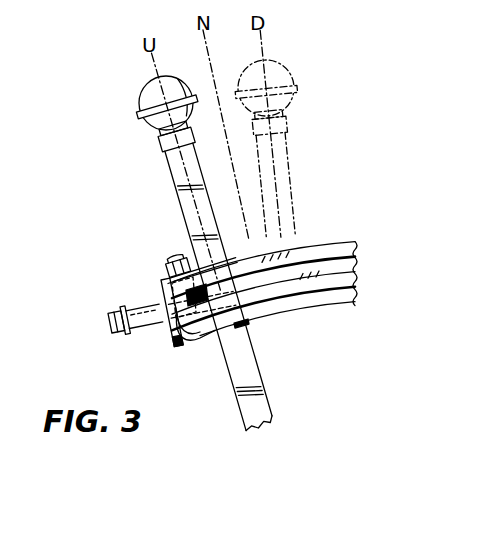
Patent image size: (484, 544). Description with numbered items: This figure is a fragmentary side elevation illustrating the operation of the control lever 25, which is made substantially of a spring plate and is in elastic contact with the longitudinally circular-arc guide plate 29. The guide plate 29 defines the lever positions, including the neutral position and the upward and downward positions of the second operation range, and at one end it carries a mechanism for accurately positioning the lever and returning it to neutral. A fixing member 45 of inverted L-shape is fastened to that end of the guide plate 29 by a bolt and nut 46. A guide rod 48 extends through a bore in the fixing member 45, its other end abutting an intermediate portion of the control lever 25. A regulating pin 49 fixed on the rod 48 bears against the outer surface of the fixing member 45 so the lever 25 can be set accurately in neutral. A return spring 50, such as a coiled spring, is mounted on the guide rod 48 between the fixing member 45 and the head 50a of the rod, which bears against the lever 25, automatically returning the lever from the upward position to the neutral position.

The control lever 25 is at (173, 176).
The guide plate 29 is at (320, 247).
The fixing member 45 is at (178, 352).
The bolt and nut 46 is at (177, 256).
The guide rod 48 is at (154, 326).
The regulating pin 49 is at (124, 305).
The return spring 50 is at (213, 333).
The head of the guide rod 50a is at (247, 323).